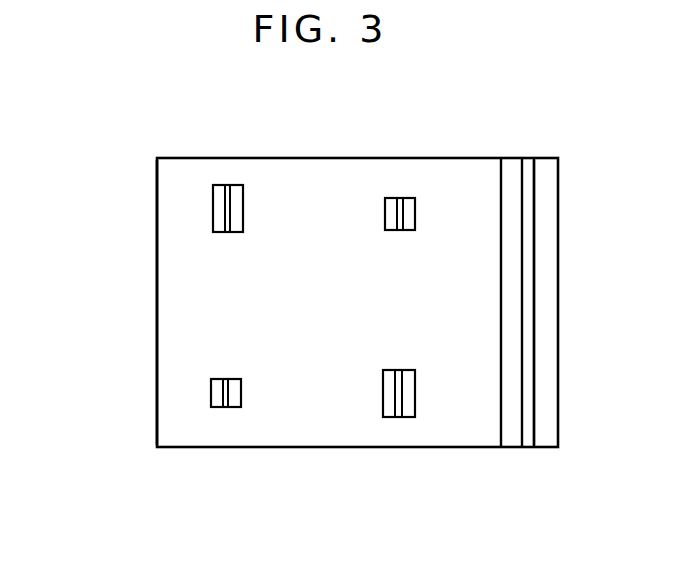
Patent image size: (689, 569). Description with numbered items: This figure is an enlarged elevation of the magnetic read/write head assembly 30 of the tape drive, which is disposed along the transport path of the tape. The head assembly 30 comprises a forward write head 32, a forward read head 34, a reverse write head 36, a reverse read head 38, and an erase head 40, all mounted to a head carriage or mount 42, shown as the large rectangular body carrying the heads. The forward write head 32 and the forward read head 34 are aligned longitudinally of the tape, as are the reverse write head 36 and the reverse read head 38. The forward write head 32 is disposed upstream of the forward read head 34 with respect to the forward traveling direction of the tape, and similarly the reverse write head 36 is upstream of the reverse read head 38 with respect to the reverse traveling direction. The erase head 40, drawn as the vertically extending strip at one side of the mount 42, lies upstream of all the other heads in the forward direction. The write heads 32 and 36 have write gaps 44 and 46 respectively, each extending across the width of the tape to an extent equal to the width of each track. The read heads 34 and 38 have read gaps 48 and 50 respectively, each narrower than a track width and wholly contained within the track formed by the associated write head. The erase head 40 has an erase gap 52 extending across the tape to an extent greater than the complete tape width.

The magnetic read/write head assembly 30 is at (113, 150).
The forward write head 32 is at (405, 417).
The forward read head 34 is at (231, 407).
The reverse write head 36 is at (220, 185).
The reverse read head 38 is at (392, 198).
The erase head 40 is at (549, 158).
The head carriage or mount 42 is at (165, 270).
The write gap 44 is at (402, 370).
The write gap 46 is at (225, 232).
The read gap 48 is at (226, 379).
The read gap 50 is at (400, 230).
The erase gap 52 is at (530, 367).